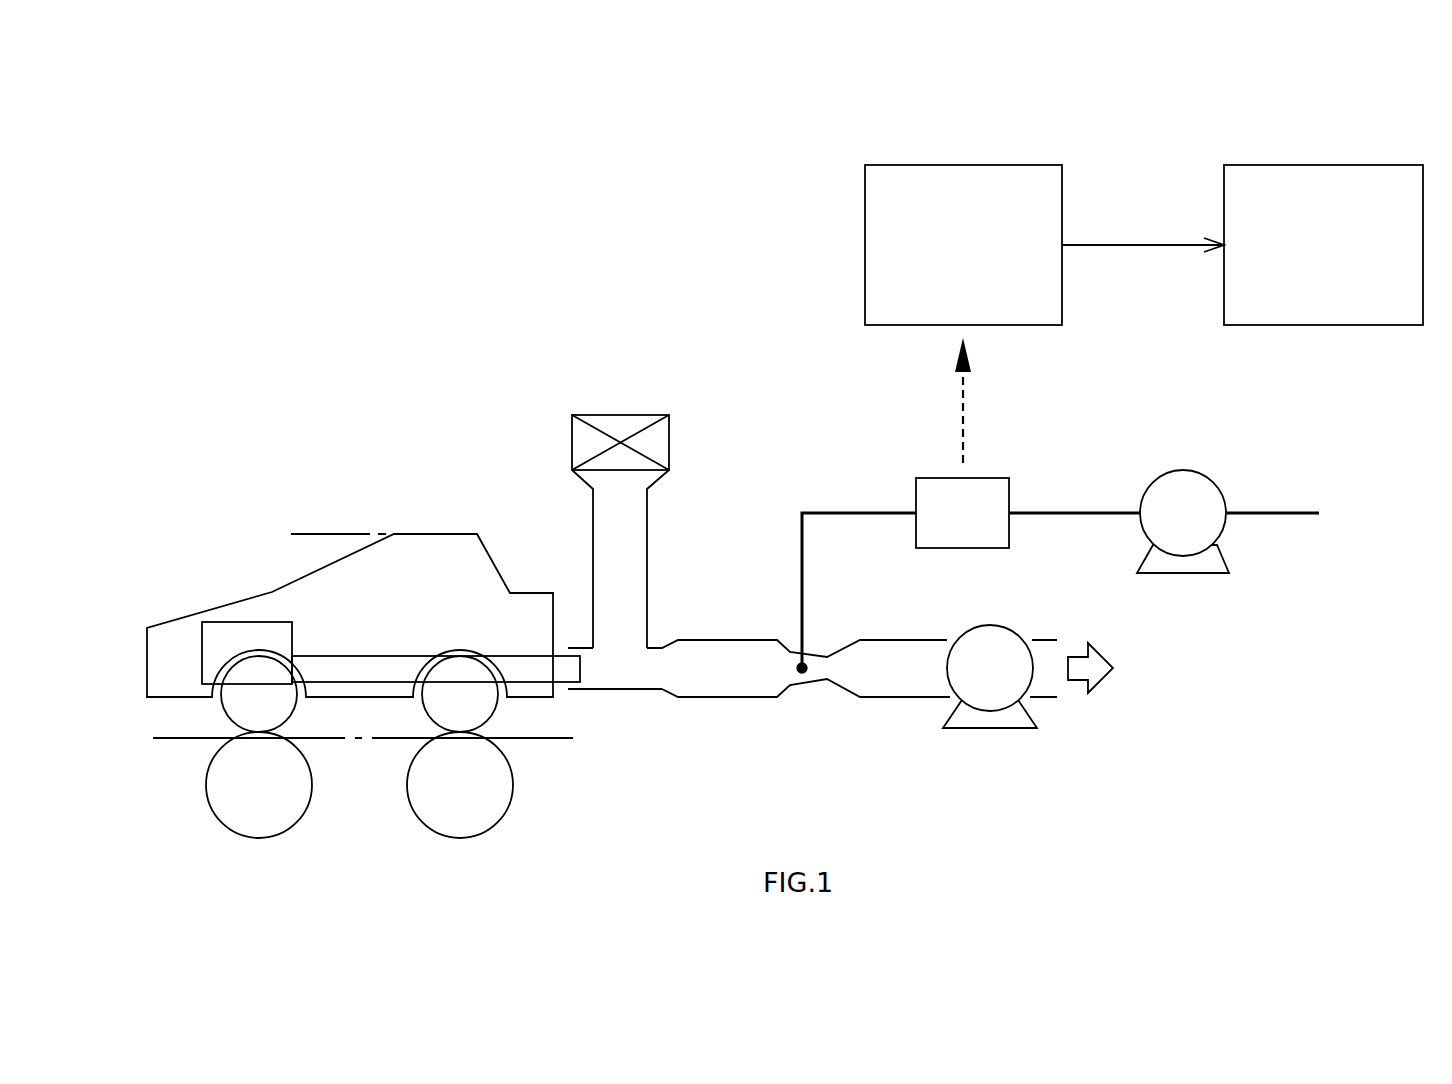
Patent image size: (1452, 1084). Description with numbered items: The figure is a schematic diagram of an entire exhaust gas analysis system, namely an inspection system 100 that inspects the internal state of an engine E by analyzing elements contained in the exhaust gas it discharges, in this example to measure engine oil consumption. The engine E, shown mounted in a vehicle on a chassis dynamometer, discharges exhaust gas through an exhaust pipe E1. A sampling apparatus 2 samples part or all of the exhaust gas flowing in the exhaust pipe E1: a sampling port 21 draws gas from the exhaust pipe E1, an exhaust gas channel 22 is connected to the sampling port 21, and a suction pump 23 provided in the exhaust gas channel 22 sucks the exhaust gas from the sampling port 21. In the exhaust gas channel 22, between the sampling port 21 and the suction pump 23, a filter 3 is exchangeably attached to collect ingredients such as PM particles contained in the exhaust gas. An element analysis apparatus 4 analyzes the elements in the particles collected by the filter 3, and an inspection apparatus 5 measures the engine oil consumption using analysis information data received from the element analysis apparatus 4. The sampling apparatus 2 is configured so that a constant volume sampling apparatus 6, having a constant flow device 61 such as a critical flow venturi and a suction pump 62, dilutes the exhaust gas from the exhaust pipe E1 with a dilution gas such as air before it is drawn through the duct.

The inspection system 100 is at (676, 290).
The sampling apparatus 2 is at (820, 466).
The sampling port 21 is at (800, 683).
The exhaust gas channel 22 is at (864, 515).
The suction pump 23 is at (1183, 468).
The filter 3 is at (963, 550).
The element analysis apparatus 4 is at (963, 163).
The inspection apparatus 5 is at (1323, 163).
The constant volume sampling apparatus 6 is at (880, 728).
The constant flow device 61 is at (832, 686).
The suction pump 62 is at (990, 706).
The engine E is at (247, 620).
The exhaust pipe E1 is at (533, 655).